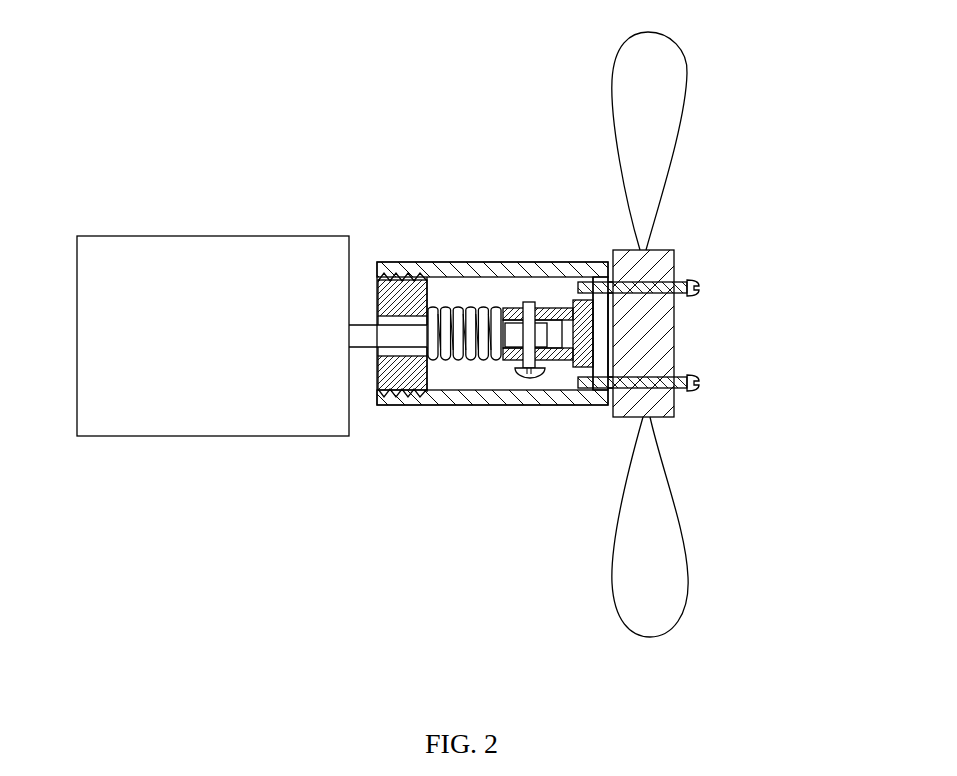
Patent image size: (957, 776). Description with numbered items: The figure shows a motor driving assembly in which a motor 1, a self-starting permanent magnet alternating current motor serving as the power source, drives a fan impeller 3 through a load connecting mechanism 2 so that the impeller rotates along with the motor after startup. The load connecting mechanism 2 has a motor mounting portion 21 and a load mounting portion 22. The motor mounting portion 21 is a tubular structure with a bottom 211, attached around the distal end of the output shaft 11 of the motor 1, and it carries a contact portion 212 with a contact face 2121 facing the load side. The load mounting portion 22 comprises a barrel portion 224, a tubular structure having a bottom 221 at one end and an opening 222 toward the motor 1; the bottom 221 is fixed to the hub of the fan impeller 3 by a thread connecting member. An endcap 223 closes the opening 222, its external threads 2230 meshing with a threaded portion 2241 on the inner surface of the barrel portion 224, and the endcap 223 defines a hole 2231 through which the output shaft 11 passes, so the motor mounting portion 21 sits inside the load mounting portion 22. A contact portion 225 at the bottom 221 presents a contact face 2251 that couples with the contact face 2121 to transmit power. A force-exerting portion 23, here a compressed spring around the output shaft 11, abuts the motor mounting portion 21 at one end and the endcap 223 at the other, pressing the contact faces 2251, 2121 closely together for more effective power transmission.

The motor 1 is at (135, 258).
The output shaft 11 is at (363, 333).
The load connecting mechanism 2 is at (494, 420).
The load mounting portion 22 is at (543, 395).
The endcap 223 is at (405, 288).
The hole 2231 is at (392, 278).
The opening 222 is at (373, 393).
The external threads 2230 is at (410, 397).
The threaded portion 2241 is at (427, 278).
The barrel portion 224 is at (497, 268).
The force-exerting portion 23 is at (490, 313).
The motor mounting portion 21 is at (557, 310).
The contact portion 212 is at (580, 316).
The bottom 211 is at (600, 347).
The contact portion 225 is at (605, 316).
The bottom 221 is at (598, 346).
The contact face 2251 is at (593, 362).
The contact face 2121 is at (610, 287).
The fan impeller 3 is at (657, 78).